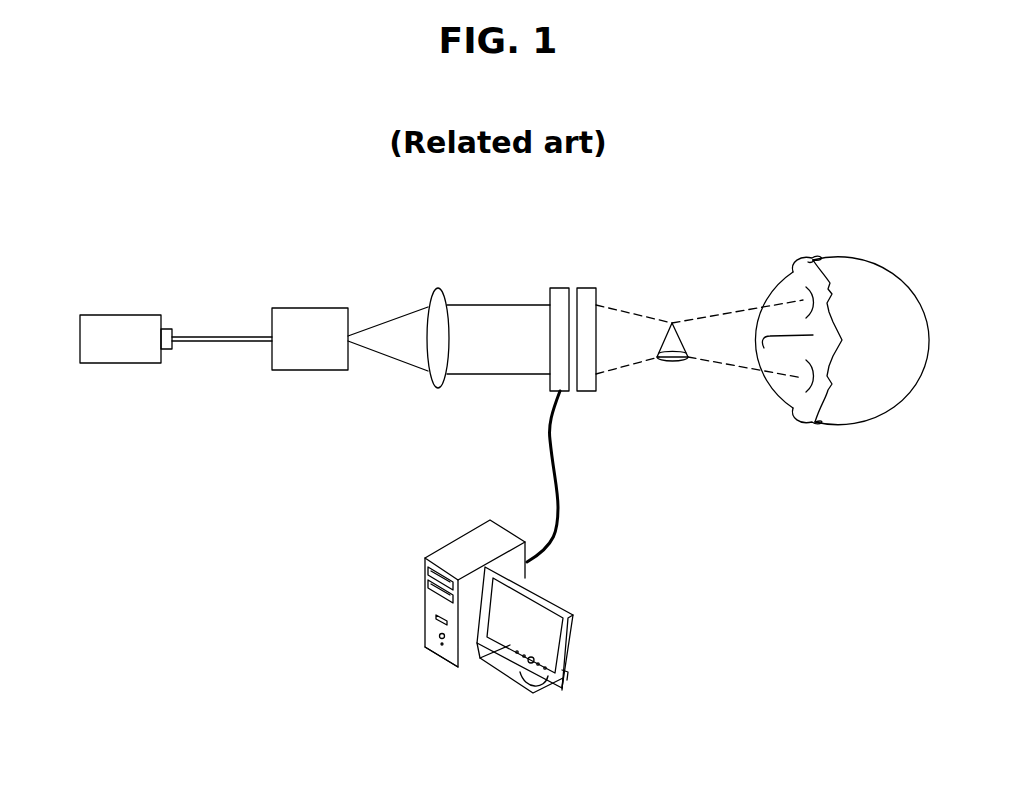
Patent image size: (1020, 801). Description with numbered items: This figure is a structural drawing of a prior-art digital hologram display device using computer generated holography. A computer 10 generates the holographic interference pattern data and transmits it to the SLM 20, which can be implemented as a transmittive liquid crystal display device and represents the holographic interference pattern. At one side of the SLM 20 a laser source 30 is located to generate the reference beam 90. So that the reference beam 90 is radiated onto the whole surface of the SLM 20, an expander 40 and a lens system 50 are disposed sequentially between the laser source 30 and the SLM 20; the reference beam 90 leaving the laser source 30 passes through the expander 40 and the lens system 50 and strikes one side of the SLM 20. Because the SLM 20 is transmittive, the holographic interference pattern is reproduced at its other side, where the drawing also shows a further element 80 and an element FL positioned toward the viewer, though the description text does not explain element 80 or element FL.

The computer 10 is at (425, 600).
The SLM 20 is at (560, 288).
The laser source 30 is at (120, 363).
The expander 40 is at (310, 370).
The lens system 50 is at (437, 390).
The lens / focal element 80 is at (672, 360).
The reference beam 90 is at (207, 328).
The field lens FL is at (586, 288).